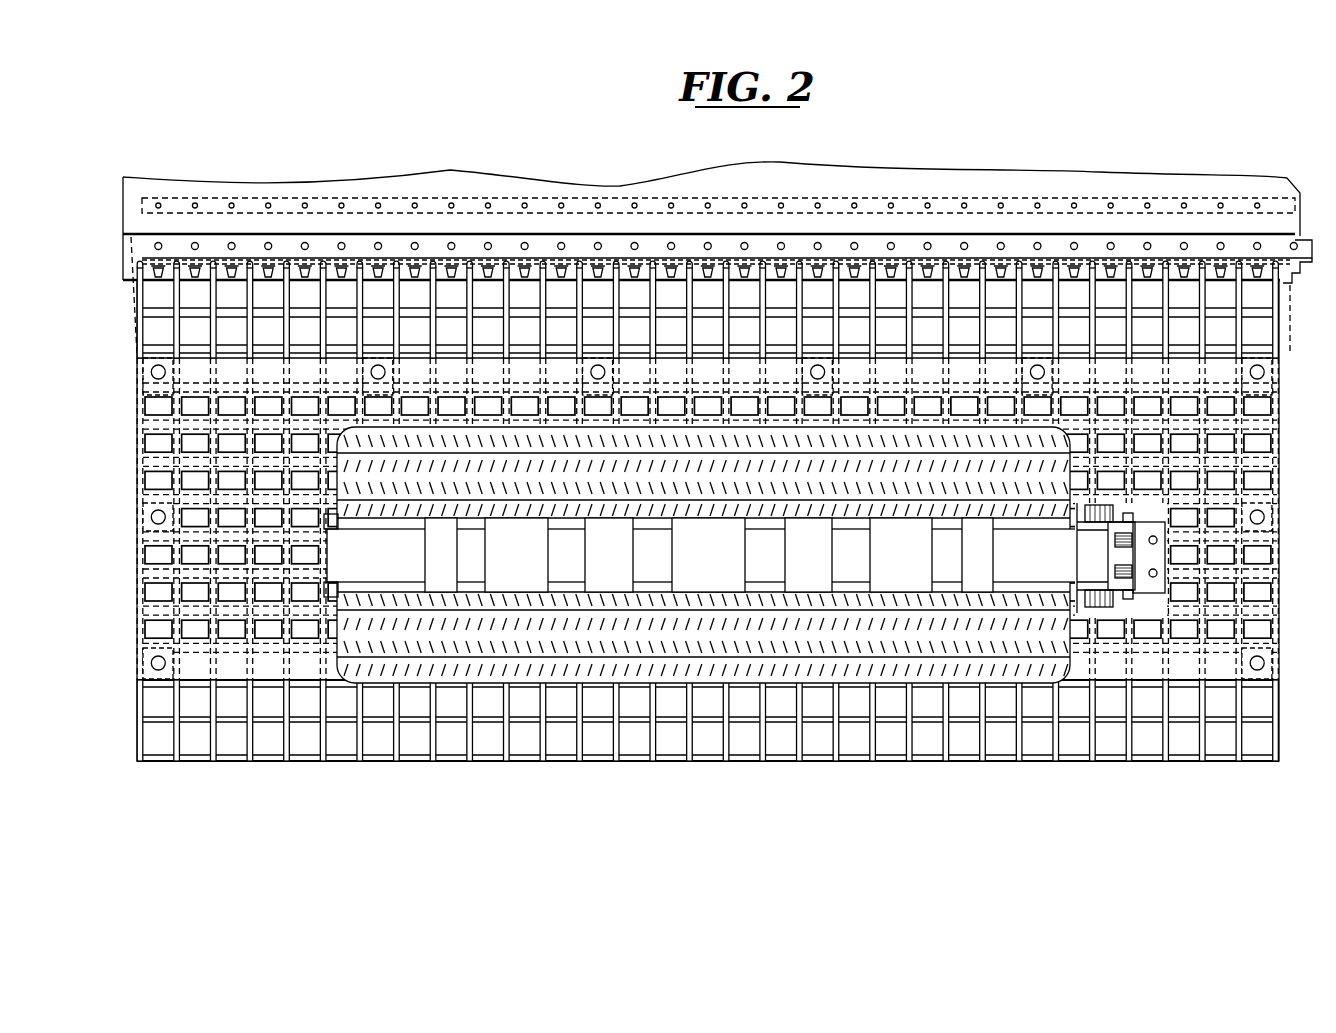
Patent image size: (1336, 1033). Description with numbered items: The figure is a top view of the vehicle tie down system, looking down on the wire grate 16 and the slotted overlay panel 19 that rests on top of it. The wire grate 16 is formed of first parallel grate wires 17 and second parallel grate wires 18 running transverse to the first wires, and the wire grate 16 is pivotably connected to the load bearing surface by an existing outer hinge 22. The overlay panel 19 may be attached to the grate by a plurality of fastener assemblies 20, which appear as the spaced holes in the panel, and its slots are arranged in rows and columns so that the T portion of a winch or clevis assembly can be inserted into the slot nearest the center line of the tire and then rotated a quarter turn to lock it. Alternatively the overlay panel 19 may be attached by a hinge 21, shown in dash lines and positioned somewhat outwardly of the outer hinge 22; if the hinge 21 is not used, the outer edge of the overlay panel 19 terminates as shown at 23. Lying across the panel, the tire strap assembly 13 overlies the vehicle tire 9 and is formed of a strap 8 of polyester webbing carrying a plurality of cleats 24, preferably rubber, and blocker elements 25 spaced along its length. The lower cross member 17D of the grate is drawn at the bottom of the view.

The strap 8 is at (357, 556).
The vehicle tire 9 is at (753, 635).
The tire strap assembly 13 is at (571, 588).
The wire grate 16 is at (1285, 718).
The first parallel grate wires 17 is at (1086, 608).
The lower cross member 17D is at (1253, 757).
The second parallel grate wires 18 is at (1167, 755).
The slotted overlay panel 19 is at (1284, 537).
The fastener assemblies 20 is at (1258, 364).
The hinge 21 is at (1052, 198).
The outer hinge 22 is at (1316, 258).
The outer edge of overlay panel 23 is at (1222, 368).
The cleats 24 is at (513, 572).
The blocker elements 25 is at (437, 562).